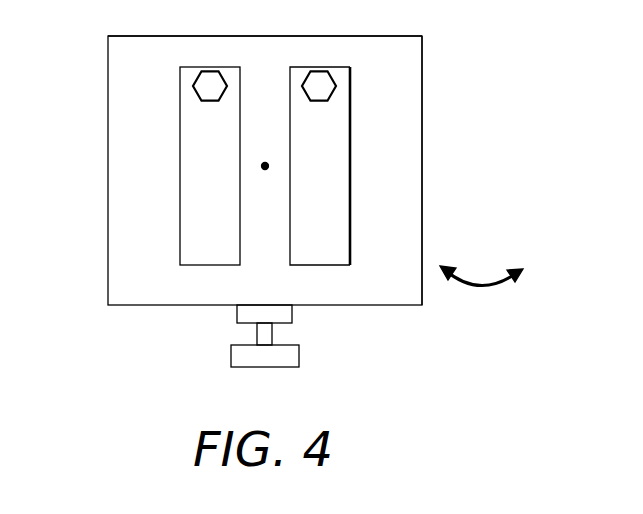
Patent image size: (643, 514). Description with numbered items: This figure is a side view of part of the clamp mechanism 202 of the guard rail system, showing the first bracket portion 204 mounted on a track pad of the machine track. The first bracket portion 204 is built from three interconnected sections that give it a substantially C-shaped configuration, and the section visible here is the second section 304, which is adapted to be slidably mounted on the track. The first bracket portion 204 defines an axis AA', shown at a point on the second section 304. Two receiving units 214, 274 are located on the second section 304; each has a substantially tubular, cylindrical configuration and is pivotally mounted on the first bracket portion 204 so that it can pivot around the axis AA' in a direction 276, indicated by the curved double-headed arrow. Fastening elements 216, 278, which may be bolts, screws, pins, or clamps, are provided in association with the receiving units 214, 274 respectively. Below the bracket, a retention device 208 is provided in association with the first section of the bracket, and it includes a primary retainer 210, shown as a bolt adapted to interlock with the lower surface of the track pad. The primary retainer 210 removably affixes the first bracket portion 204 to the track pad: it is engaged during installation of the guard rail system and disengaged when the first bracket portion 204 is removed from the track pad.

The clamp mechanism 202 is at (508, 53).
The first bracket portion 204 is at (385, 36).
The retention device 208 is at (310, 334).
The primary retainer 210 is at (283, 367).
The receiving unit 214 is at (350, 205).
The fastening element 216 is at (328, 86).
The receiving unit 274 is at (180, 199).
The direction 276 is at (482, 291).
The fastening element 278 is at (204, 87).
The second section 304 is at (407, 170).
The axis A-A' AA' is at (149, 158).